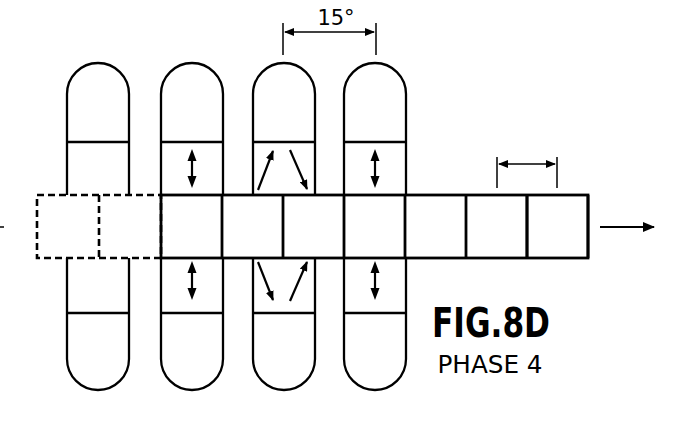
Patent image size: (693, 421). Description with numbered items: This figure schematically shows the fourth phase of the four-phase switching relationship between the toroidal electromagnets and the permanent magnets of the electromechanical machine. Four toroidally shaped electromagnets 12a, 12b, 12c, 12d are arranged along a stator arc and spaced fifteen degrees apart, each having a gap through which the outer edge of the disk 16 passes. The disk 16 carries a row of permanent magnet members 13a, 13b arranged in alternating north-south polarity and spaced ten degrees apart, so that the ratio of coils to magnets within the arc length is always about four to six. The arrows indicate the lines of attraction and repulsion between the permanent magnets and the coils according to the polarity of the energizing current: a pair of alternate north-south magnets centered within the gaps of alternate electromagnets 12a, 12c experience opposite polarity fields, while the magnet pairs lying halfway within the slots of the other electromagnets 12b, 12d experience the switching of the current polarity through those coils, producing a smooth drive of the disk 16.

The toroidally shaped electromagnet 12a is at (103, 62).
The toroidally shaped electromagnet 12b is at (193, 62).
The toroidally shaped electromagnet 12c is at (272, 62).
The toroidally shaped electromagnet 12d is at (391, 63).
The permanent magnet member 13a is at (572, 194).
The permanent magnet member 13b is at (483, 194).
The disk 16 is at (345, 204).